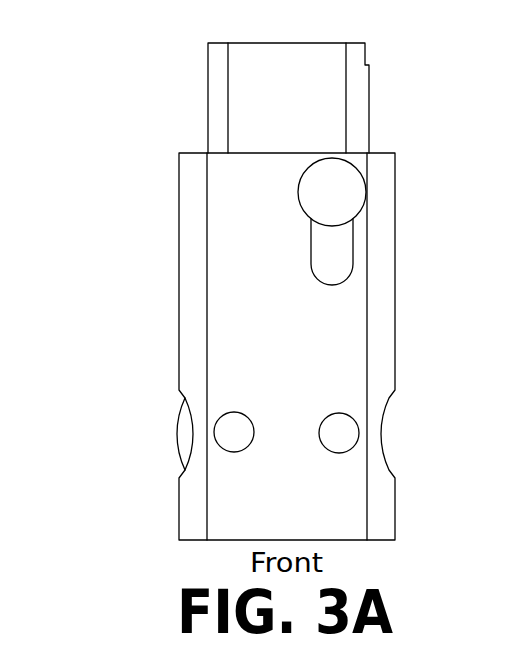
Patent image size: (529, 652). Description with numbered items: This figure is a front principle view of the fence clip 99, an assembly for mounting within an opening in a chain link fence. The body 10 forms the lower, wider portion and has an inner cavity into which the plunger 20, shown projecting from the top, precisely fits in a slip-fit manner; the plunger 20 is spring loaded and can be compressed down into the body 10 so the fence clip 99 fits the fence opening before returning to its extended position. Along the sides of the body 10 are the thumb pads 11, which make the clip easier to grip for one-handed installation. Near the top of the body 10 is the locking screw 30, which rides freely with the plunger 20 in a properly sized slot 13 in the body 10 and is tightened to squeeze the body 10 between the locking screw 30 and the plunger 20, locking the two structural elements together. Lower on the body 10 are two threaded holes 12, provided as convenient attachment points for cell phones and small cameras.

The fence clip 99 is at (125, 310).
The plunger 20 is at (258, 95).
The body 10 is at (228, 212).
The thumb pads 11 is at (187, 405).
The threaded holes 12 is at (236, 437).
The slot 13 is at (331, 265).
The locking screw 30 is at (343, 190).